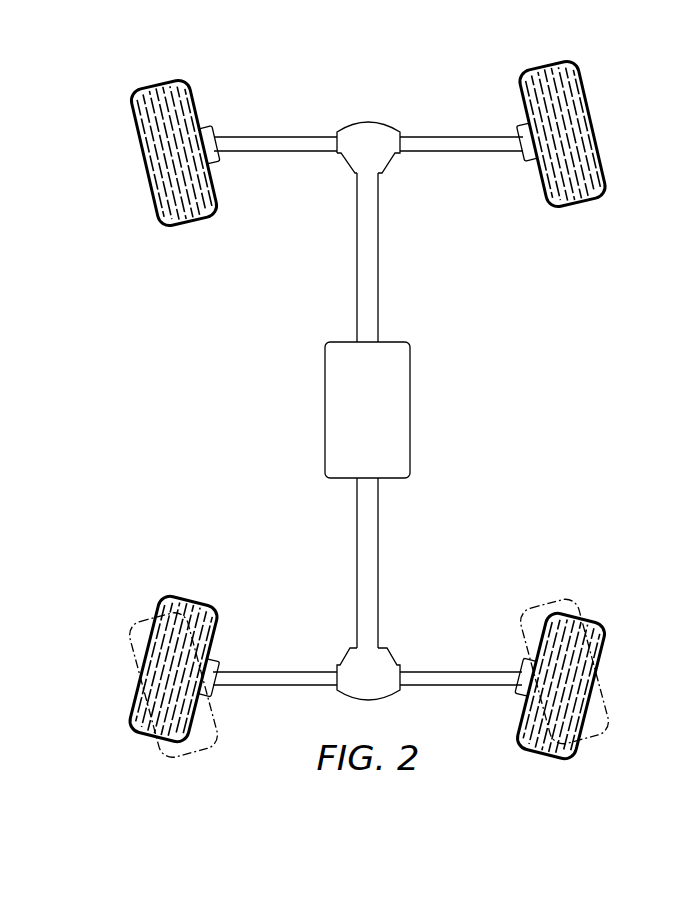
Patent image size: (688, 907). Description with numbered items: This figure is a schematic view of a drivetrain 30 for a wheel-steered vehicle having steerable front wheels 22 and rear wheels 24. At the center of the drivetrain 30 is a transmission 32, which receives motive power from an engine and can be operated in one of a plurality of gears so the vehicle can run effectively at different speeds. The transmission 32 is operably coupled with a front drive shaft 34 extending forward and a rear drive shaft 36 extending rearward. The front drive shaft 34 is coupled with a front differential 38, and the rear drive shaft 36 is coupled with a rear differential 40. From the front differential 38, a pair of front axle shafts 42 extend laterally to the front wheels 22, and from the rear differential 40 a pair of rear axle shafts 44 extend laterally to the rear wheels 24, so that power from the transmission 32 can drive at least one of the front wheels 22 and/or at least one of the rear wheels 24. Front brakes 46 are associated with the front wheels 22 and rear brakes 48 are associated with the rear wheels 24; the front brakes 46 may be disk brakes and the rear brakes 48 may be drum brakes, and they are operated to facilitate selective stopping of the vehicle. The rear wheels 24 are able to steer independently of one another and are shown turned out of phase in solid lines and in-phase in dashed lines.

The drivetrain 30 is at (106, 290).
The front wheels 22 is at (145, 82).
The rear wheels 24 is at (132, 717).
The transmission 32 is at (325, 397).
The front drive shaft 34 is at (357, 257).
The rear drive shaft 36 is at (379, 562).
The front differential 38 is at (370, 121).
The rear differential 40 is at (385, 698).
The front axle shafts 42 is at (282, 137).
The rear axle shafts 44 is at (273, 687).
The front brakes 46 is at (207, 123).
The rear brakes 48 is at (212, 663).